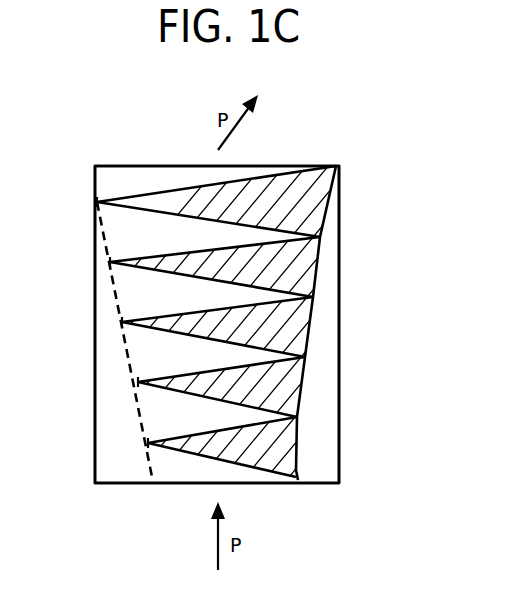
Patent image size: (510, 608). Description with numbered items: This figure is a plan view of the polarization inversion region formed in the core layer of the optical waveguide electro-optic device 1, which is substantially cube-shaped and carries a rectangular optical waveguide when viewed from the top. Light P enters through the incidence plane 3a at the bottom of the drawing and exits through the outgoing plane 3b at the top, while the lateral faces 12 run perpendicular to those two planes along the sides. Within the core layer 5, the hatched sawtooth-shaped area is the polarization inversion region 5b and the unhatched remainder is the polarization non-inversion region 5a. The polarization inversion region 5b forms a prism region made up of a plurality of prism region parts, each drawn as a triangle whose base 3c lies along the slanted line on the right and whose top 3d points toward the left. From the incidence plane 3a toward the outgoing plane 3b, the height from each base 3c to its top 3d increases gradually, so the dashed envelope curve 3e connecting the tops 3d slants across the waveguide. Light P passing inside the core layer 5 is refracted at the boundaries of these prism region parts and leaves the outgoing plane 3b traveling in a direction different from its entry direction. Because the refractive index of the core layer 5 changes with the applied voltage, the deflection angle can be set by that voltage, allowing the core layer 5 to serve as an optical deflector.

The optical waveguide electro-optic device 1 is at (330, 110).
The incidence plane 3a is at (290, 485).
The outgoing plane 3b is at (162, 166).
The base 3c is at (315, 290).
The top 3d is at (110, 262).
The envelope curve 3e is at (110, 300).
The core layer 5 is at (340, 316).
The polarization non-inversion region 5a is at (325, 376).
The polarization inversion region 5b is at (329, 191).
The lateral face 12 is at (340, 228).